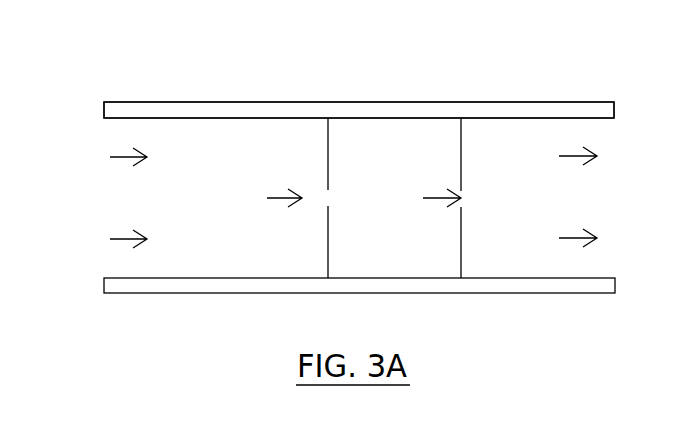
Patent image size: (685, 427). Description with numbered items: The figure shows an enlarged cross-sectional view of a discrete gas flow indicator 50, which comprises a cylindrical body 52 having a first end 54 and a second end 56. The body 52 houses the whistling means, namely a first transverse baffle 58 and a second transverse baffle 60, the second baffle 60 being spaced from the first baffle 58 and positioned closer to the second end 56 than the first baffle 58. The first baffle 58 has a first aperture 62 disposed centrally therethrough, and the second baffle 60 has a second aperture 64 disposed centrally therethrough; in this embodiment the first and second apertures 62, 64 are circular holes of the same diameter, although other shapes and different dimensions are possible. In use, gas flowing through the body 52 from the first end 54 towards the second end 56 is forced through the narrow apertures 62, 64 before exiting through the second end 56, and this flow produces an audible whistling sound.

The discrete gas flow indicator 50 is at (157, 70).
The cylindrical body 52 is at (249, 102).
The first end 54 is at (98, 142).
The second end 56 is at (600, 150).
The first transverse baffle 58 is at (328, 157).
The second transverse baffle 60 is at (461, 157).
The first aperture 62 is at (334, 200).
The second aperture 64 is at (467, 200).